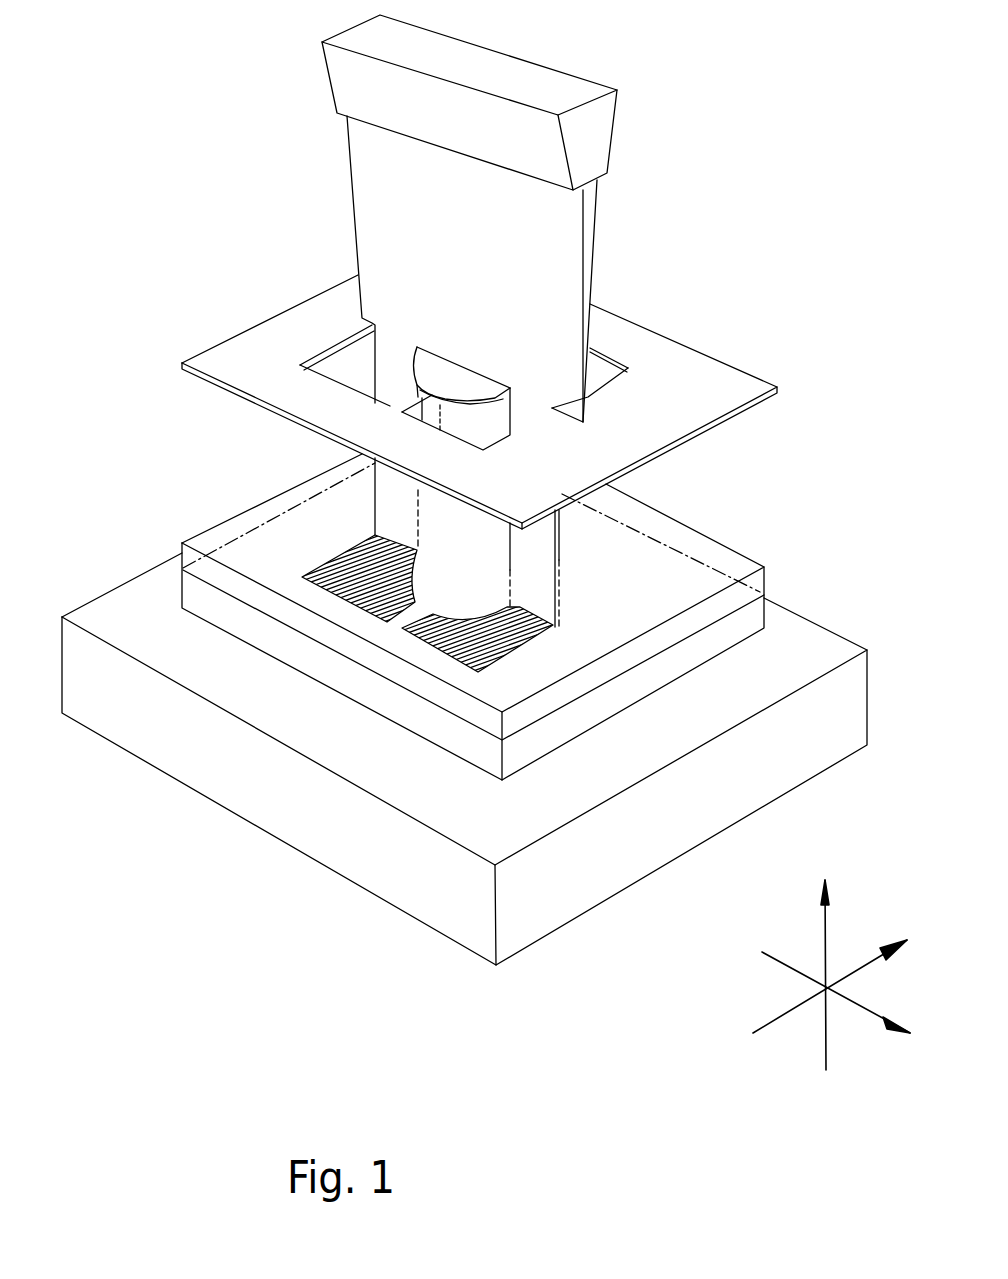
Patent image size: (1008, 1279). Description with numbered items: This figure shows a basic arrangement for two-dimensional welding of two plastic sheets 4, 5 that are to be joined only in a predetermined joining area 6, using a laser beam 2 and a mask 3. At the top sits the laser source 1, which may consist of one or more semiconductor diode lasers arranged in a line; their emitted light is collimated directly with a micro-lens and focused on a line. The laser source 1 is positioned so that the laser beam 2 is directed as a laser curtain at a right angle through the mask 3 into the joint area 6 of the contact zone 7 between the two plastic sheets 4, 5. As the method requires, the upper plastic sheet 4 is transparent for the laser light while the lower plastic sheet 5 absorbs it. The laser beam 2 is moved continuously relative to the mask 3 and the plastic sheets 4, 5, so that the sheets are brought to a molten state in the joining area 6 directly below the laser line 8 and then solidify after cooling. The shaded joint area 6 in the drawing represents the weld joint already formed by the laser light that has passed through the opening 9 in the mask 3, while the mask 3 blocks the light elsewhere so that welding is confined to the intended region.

The laser source 1 is at (527, 80).
The laser beam 2 is at (562, 222).
The mask 3 is at (718, 375).
The plastic sheet 4 is at (770, 577).
The plastic sheet 5 is at (670, 665).
The joining area 6 is at (347, 570).
The contact zone 7 is at (653, 538).
The laser line 8 is at (553, 625).
The opening 9 is at (350, 357).